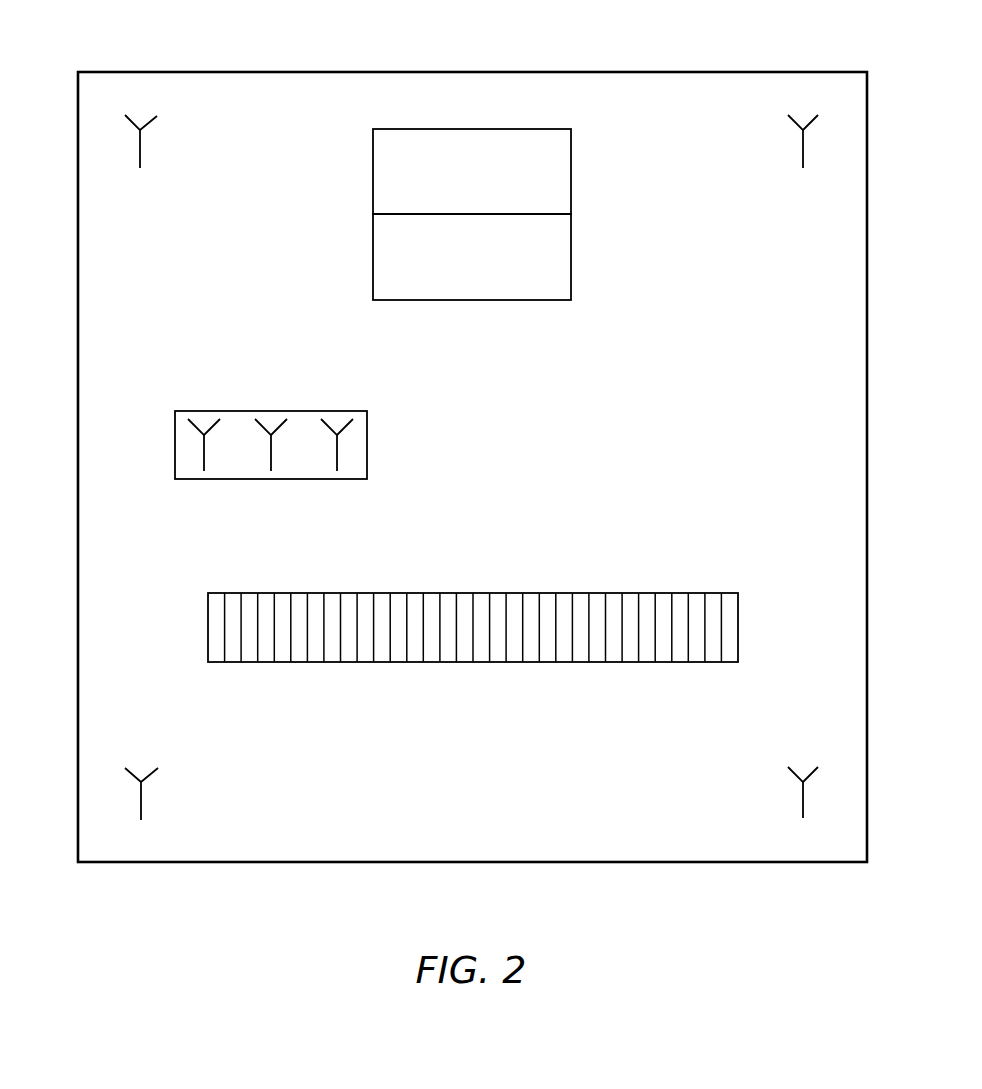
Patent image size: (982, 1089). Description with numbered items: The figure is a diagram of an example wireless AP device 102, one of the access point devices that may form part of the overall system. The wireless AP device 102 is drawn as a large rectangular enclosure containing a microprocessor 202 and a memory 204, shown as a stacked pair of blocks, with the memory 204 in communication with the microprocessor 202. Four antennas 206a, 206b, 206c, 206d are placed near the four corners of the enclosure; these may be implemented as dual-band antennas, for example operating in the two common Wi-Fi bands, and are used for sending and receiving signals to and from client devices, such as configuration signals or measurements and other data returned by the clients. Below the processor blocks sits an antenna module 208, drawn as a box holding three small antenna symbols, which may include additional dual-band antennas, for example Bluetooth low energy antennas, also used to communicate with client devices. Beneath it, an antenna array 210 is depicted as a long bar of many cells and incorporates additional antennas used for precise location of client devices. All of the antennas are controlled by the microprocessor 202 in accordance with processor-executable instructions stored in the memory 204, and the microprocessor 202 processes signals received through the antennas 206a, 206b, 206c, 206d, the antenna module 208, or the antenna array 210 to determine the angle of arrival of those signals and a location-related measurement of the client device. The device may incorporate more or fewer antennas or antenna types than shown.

The wireless AP device 102 is at (140, 50).
The microprocessor 202 is at (571, 170).
The memory 204 is at (571, 255).
The antenna 206a is at (143, 142).
The antenna 206b is at (800, 142).
The antenna 206c is at (146, 793).
The antenna 206d is at (800, 794).
The antenna module 208 is at (270, 411).
The antenna array 210 is at (556, 593).